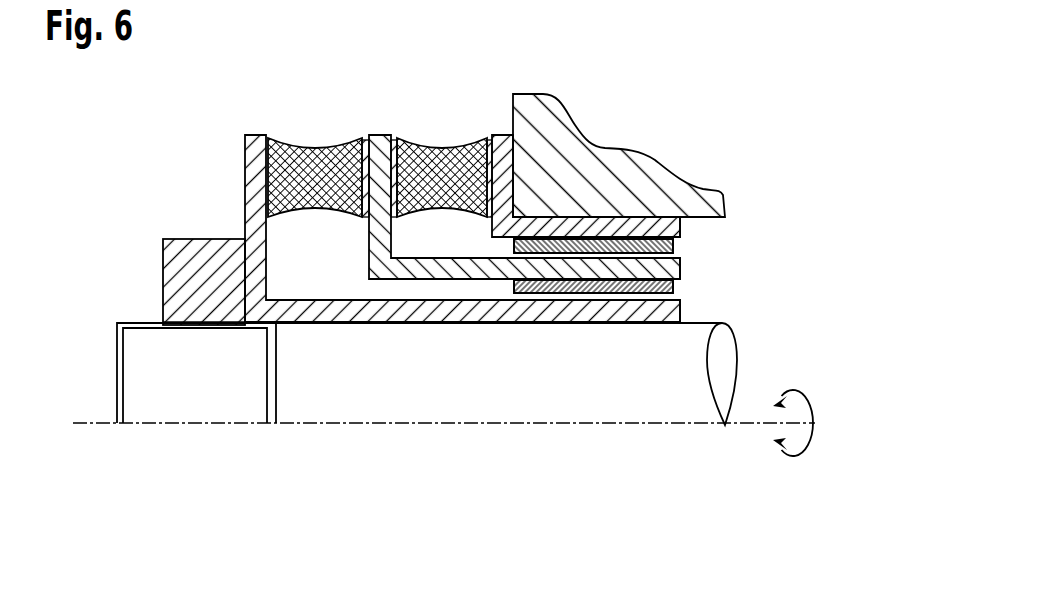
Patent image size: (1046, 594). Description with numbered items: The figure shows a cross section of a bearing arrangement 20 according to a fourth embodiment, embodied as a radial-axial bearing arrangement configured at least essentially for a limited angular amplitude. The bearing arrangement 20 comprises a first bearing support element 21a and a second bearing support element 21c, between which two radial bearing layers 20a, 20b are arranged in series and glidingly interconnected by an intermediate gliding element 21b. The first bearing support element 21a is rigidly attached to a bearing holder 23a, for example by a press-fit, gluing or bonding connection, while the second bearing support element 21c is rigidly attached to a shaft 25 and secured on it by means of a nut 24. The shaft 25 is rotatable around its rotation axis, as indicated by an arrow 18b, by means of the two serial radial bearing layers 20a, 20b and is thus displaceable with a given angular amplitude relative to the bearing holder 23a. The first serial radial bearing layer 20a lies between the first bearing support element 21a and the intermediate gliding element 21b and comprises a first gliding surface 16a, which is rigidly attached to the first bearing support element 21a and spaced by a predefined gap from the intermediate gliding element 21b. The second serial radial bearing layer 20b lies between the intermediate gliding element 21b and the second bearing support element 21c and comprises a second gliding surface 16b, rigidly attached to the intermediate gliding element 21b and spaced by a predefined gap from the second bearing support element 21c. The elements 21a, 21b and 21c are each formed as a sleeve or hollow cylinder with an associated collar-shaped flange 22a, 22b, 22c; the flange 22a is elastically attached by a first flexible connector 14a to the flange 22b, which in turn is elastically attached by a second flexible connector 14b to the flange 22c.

The bearing arrangement 20 is at (251, 109).
The first serial radial bearing layer 20a is at (716, 247).
The second serial radial bearing layer 20b is at (716, 283).
The first bearing support element 21a is at (663, 227).
The intermediate gliding element 21b is at (663, 270).
The second bearing support element 21c is at (663, 312).
The collar-shaped flange 22a is at (500, 150).
The collar-shaped flange 22b is at (380, 157).
The collar-shaped flange 22c is at (257, 157).
The first flexible connector 14a is at (440, 168).
The second flexible connector 14b is at (318, 167).
The first gliding surface 16a is at (660, 247).
The second gliding surface 16b is at (663, 290).
The bearing holder 23a is at (607, 167).
The nut 24 is at (182, 280).
The shaft 25 is at (528, 400).
The arrow 18b is at (792, 458).